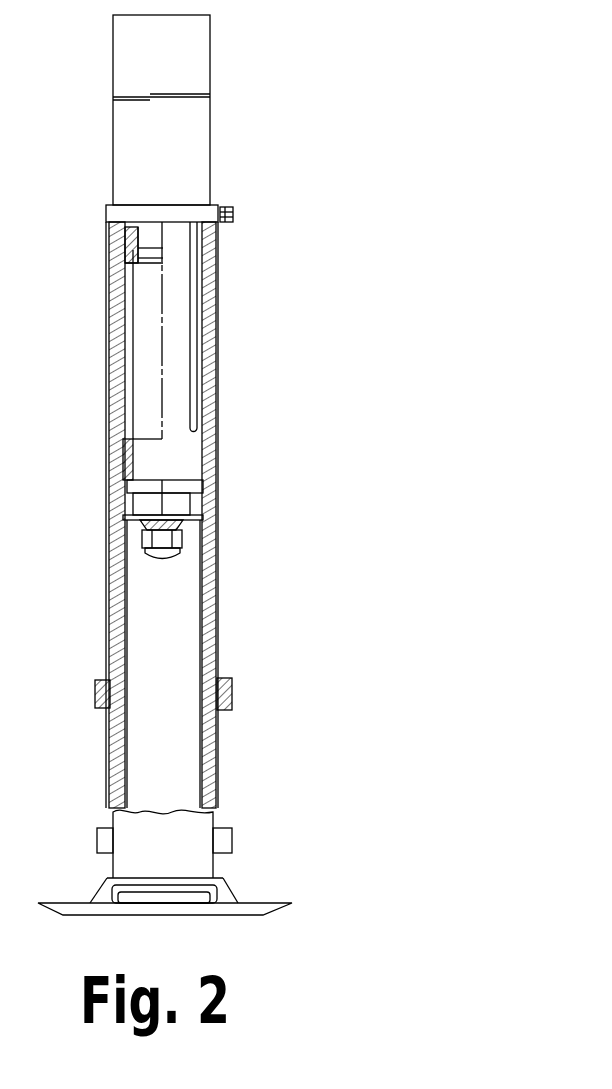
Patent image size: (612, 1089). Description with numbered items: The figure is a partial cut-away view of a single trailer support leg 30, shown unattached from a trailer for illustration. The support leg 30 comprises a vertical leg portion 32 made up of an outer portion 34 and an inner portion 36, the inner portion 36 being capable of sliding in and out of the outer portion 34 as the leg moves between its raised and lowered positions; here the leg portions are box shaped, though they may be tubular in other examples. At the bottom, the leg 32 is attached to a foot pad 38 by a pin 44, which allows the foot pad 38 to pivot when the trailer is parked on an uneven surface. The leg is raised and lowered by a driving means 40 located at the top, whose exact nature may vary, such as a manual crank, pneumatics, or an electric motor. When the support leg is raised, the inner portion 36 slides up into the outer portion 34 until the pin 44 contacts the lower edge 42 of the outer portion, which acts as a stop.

The trailer support leg 30 is at (380, 338).
The vertical leg portion 32 is at (218, 318).
The outer portion 34 is at (217, 655).
The inner portion 36 is at (217, 760).
The foot pad 38 is at (270, 902).
The driving means 40 is at (130, 246).
The lower edge 42 is at (95, 702).
The pin 44 is at (95, 845).